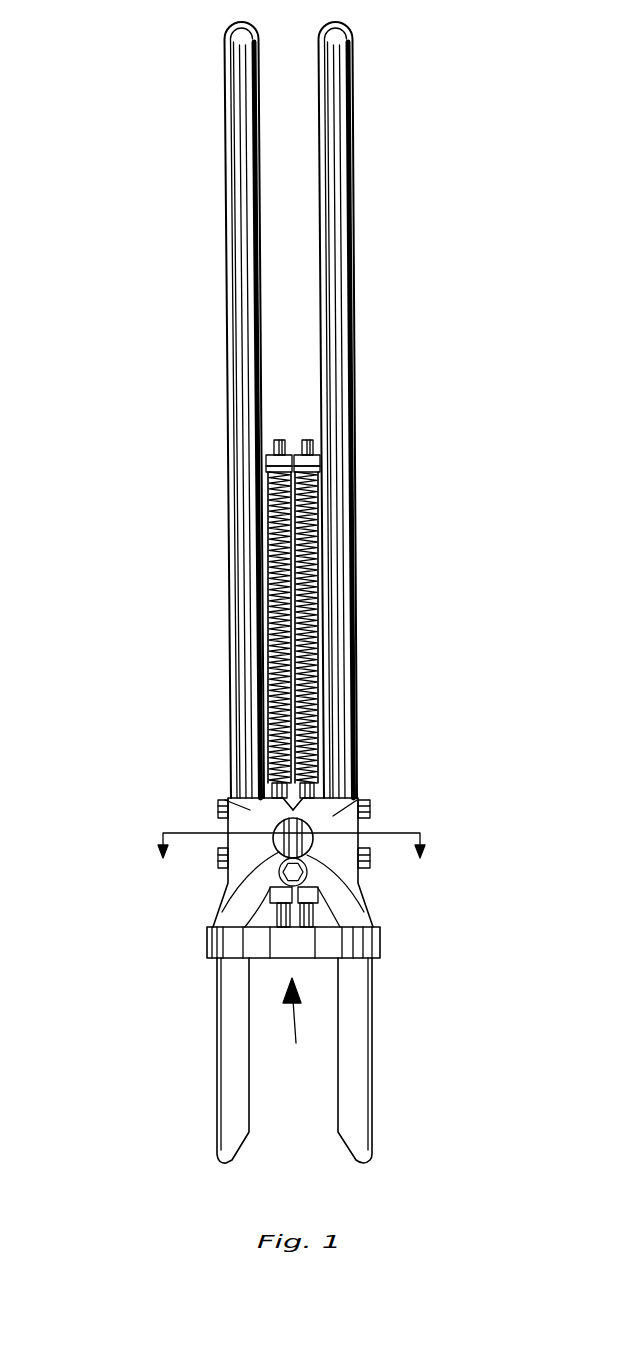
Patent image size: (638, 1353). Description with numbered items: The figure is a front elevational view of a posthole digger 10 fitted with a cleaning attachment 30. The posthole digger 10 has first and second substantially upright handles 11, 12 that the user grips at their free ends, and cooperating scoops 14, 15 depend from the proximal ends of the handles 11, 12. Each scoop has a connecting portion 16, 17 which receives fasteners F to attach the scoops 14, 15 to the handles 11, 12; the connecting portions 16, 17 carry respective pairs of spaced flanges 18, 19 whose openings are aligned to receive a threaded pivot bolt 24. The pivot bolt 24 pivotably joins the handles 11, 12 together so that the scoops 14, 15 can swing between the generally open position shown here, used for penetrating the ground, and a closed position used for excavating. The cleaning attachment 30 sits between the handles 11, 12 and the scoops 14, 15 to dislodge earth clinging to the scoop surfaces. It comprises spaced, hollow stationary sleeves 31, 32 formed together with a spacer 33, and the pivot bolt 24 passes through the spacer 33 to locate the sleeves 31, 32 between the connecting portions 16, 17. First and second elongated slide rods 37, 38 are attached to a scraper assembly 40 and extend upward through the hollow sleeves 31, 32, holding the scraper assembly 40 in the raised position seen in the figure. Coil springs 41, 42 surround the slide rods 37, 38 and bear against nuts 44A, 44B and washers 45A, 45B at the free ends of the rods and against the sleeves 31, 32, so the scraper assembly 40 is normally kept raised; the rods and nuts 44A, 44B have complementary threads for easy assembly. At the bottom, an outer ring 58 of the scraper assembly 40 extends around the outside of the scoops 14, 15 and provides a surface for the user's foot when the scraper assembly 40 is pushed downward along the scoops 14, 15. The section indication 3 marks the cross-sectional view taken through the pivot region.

The posthole digger 10 is at (170, 310).
The first handle 11 is at (192, 410).
The second handle 12 is at (383, 410).
The scoop 14 is at (231, 1062).
The scoop 15 is at (357, 1048).
The connecting portion 16 is at (222, 888).
The connecting portion 17 is at (360, 882).
The spaced flanges 18 is at (218, 808).
The spaced flanges 19 is at (370, 800).
The threaded pivot bolt 24 is at (305, 877).
The cleaning attachment 30 is at (292, 365).
The hollow stationary sleeve 31 is at (225, 800).
The hollow stationary sleeve 32 is at (357, 800).
The spacer 33 is at (213, 935).
The first elongated slide rod 37 is at (257, 655).
The second elongated slide rod 38 is at (328, 610).
The scraper assembly 40 is at (295, 1025).
The coil spring 41 is at (266, 573).
The coil spring 42 is at (310, 555).
The nut 44A is at (266, 456).
The nut 44B is at (320, 455).
The washer 45A is at (266, 472).
The washer 45B is at (320, 468).
The outer ring 58 is at (258, 978).
The section line 3- 3 is at (290, 857).
The fasteners F is at (290, 831).